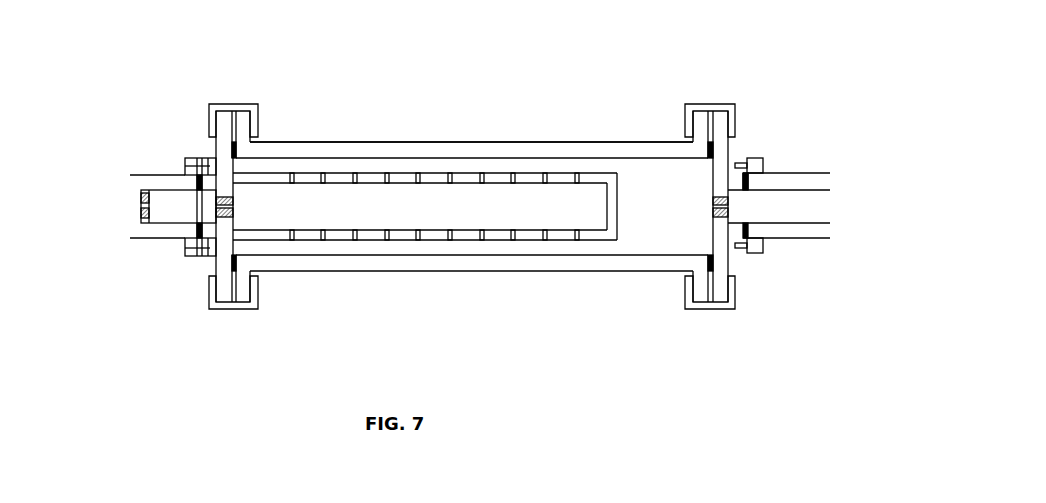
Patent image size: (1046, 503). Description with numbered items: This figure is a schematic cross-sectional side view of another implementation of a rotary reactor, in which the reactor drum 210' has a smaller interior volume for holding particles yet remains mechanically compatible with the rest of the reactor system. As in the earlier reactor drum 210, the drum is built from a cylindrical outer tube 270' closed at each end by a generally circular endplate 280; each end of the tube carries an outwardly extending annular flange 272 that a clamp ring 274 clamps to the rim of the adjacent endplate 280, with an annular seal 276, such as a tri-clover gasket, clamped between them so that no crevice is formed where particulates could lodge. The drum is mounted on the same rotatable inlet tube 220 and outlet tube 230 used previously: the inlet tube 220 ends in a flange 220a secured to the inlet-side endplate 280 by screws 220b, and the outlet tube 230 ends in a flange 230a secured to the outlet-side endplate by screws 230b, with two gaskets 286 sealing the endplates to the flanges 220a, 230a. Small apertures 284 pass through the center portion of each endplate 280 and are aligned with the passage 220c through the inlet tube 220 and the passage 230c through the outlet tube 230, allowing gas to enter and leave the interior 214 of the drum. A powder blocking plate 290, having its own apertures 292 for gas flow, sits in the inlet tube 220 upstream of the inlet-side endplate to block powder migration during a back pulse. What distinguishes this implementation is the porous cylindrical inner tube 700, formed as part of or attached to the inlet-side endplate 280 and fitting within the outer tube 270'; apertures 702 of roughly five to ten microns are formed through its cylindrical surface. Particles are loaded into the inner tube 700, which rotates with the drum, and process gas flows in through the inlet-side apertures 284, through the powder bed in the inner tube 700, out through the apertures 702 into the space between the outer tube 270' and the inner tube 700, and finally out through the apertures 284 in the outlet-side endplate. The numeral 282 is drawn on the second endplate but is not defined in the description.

The rotary reactor drum 210 is at (472, 310).
The reactor drum 210' is at (471, 99).
The interior of the reactor drum 214 is at (478, 219).
The rotatable inlet tube 220 is at (161, 226).
The flange of the inlet tube 220a is at (193, 257).
The screws 220b is at (195, 165).
The passage through the rotatable inlet tube 220c is at (167, 200).
The rotatable outlet tube 230 is at (803, 226).
The flange of the outlet tube 230a is at (757, 158).
The screws 230b is at (752, 254).
The passage through the rotatable outlet tube 230c is at (785, 212).
The outer tube 270' is at (472, 169).
The annular flange 272 is at (243, 127).
The clamp ring 274 is at (730, 118).
The annular seal 276 is at (712, 270).
The endplate 280 is at (227, 172).
The second flange plate 282 is at (719, 122).
The small apertures 284 is at (234, 205).
The gaskets 286 is at (743, 236).
The powder blocking plate 290 is at (140, 200).
The apertures 292 is at (140, 213).
The porous cylindrical inner tube 700 is at (367, 178).
The apertures 702 is at (460, 240).